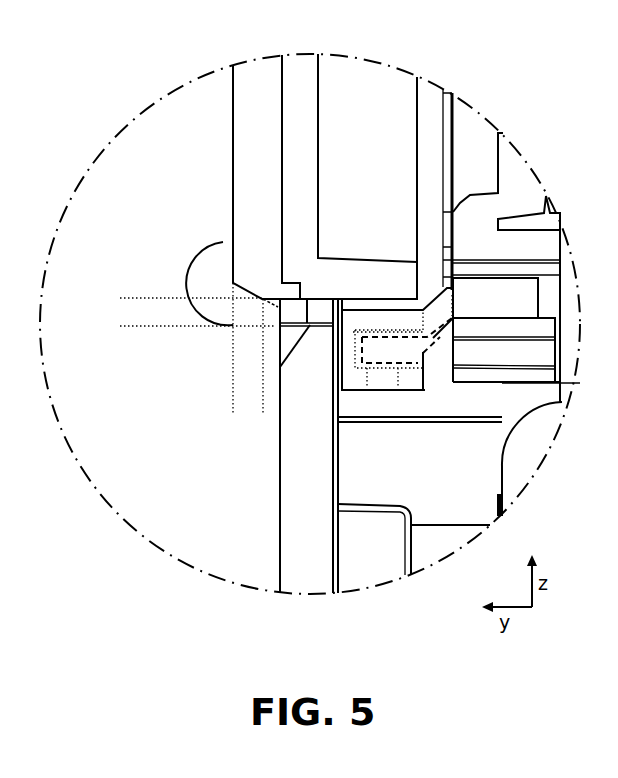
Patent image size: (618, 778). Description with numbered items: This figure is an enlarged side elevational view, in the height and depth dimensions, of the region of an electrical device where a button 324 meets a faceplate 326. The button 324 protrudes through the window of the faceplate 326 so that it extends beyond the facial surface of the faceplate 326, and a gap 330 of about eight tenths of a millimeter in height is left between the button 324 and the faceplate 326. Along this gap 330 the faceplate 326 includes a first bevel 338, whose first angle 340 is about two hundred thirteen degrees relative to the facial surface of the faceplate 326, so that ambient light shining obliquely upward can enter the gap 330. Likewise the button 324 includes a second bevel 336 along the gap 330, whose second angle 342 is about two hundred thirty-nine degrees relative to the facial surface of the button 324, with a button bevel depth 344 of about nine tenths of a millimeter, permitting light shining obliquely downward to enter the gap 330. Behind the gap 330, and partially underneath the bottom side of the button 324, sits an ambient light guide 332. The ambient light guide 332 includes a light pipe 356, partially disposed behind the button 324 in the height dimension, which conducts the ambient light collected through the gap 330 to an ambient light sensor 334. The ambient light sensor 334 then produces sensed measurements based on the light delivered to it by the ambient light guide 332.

The button 324 is at (233, 158).
The faceplate 326 is at (279, 519).
The gap 330 is at (120, 298).
The ambient light guide 332 is at (407, 391).
The ambient light sensor 334 is at (557, 318).
The second bevel 336 is at (264, 307).
The first bevel 338 is at (304, 334).
The first angle 340 is at (288, 332).
The second angle 342 is at (225, 238).
The button bevel depth 344 is at (263, 415).
The light pipe 356 is at (515, 280).